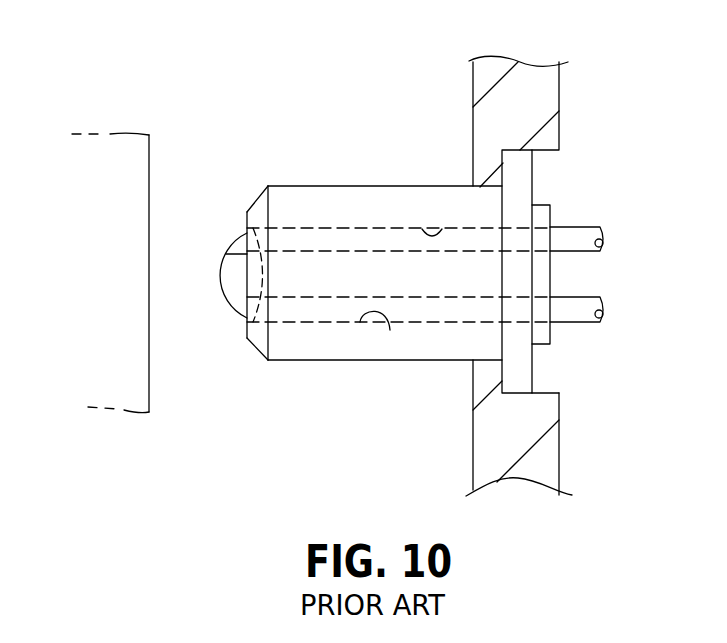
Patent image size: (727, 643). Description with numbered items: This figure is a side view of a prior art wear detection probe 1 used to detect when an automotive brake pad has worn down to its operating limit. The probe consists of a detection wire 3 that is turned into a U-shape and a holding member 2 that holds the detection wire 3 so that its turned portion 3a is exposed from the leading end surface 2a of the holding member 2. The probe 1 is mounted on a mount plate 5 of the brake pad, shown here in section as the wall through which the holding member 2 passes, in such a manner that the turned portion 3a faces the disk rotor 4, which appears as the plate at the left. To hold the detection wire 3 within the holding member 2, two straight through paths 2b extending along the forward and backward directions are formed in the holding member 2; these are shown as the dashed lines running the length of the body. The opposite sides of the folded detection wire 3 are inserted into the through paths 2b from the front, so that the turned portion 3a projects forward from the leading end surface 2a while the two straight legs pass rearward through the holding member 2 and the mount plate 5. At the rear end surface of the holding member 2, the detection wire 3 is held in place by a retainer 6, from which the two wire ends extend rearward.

The wear detection probe 1 is at (296, 156).
The holding member 2 is at (375, 278).
The leading end surface 2a is at (247, 223).
The through paths 2b is at (420, 222).
The detection wire 3 is at (361, 268).
The turned portion 3a is at (222, 273).
The disk rotor 4 is at (150, 178).
The mount plate 5 is at (520, 80).
The retainer 6 is at (548, 213).